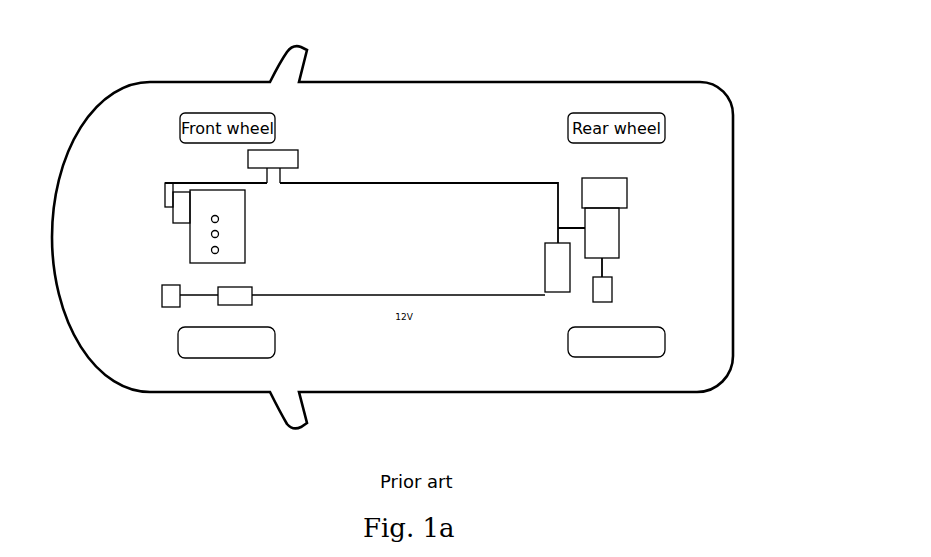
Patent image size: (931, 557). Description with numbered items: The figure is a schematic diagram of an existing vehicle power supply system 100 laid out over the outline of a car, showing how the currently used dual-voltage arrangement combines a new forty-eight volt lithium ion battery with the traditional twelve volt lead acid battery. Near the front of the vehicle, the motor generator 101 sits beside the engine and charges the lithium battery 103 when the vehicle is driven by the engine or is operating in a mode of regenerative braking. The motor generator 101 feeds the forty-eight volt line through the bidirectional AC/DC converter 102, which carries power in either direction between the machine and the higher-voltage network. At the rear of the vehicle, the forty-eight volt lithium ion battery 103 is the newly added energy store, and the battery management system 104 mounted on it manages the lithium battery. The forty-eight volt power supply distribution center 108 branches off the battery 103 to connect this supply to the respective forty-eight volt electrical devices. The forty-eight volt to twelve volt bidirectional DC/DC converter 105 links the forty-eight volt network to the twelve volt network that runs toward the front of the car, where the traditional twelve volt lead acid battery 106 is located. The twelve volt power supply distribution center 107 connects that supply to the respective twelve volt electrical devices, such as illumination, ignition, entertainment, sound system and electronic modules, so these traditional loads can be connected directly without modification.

The power supply system 100 is at (558, 172).
The motor generator 101 is at (168, 184).
The bidirectional AC/DC converter 102 is at (293, 150).
The 48V lithium ion battery 103 is at (608, 247).
The battery management system 104 is at (612, 188).
The 48V/12V bidirectional DC/DC converter 105 is at (552, 293).
The 12V lead acid battery 106 is at (228, 305).
The 12V power supply distribution center 107 is at (163, 307).
The 48V power supply distribution center 108 is at (612, 292).